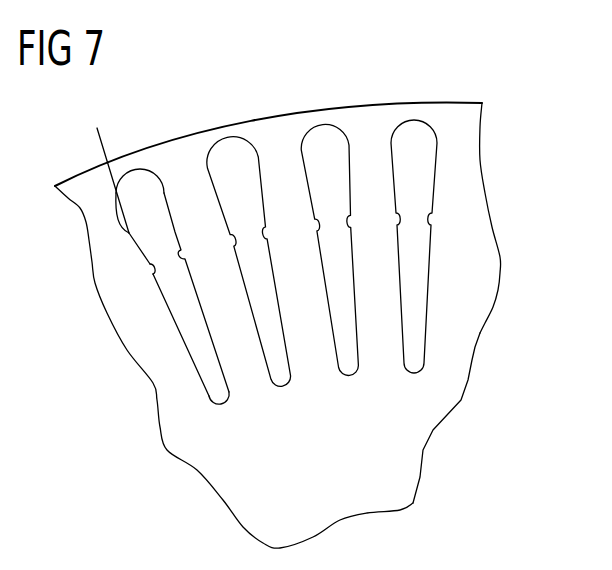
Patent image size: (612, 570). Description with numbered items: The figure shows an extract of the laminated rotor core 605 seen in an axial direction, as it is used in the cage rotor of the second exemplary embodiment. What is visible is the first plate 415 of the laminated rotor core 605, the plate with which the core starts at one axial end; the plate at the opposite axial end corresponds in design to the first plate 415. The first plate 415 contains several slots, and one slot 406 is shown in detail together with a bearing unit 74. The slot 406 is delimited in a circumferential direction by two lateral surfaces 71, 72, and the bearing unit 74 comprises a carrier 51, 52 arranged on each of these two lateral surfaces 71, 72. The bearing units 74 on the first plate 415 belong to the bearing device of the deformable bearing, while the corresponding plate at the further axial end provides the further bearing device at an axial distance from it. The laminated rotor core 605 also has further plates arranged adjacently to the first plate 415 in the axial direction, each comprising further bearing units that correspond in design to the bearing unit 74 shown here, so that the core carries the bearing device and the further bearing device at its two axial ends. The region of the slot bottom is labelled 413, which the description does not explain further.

The laminated rotor core 605 is at (517, 157).
The first plate 415 is at (428, 402).
The slot bottom 413 is at (226, 404).
The slot 406 is at (162, 297).
The carrier 51 is at (150, 264).
The carrier 52 is at (182, 257).
The lateral surface 71 is at (106, 163).
The lateral surface 72 is at (163, 195).
The bearing unit 74 is at (125, 235).